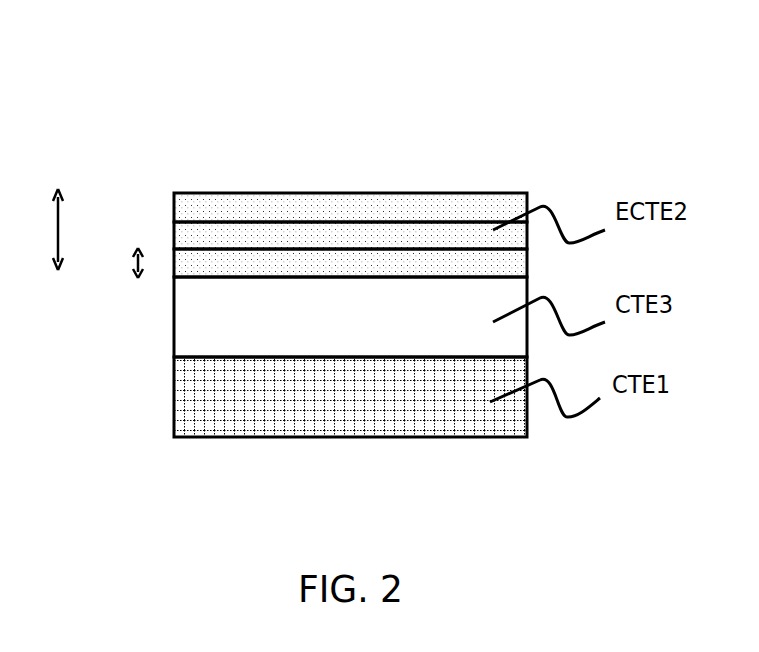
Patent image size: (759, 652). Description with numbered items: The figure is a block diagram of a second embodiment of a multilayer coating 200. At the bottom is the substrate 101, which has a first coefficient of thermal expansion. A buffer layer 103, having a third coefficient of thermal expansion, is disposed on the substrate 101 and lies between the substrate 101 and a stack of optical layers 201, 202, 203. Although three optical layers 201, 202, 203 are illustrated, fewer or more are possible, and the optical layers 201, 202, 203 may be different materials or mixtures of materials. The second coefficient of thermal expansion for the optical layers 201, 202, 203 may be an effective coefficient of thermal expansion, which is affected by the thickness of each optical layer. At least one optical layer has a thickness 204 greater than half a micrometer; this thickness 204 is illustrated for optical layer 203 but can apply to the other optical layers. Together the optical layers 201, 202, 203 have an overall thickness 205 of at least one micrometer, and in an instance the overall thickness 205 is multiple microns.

The multilayer coating 200 is at (310, 231).
The optical layer 201 is at (180, 207).
The optical layer 202 is at (273, 235).
The optical layer 203 is at (405, 262).
The thickness 204 is at (111, 264).
The overall thickness 205 is at (36, 229).
The buffer layer 103 is at (372, 332).
The substrate 101 is at (372, 413).